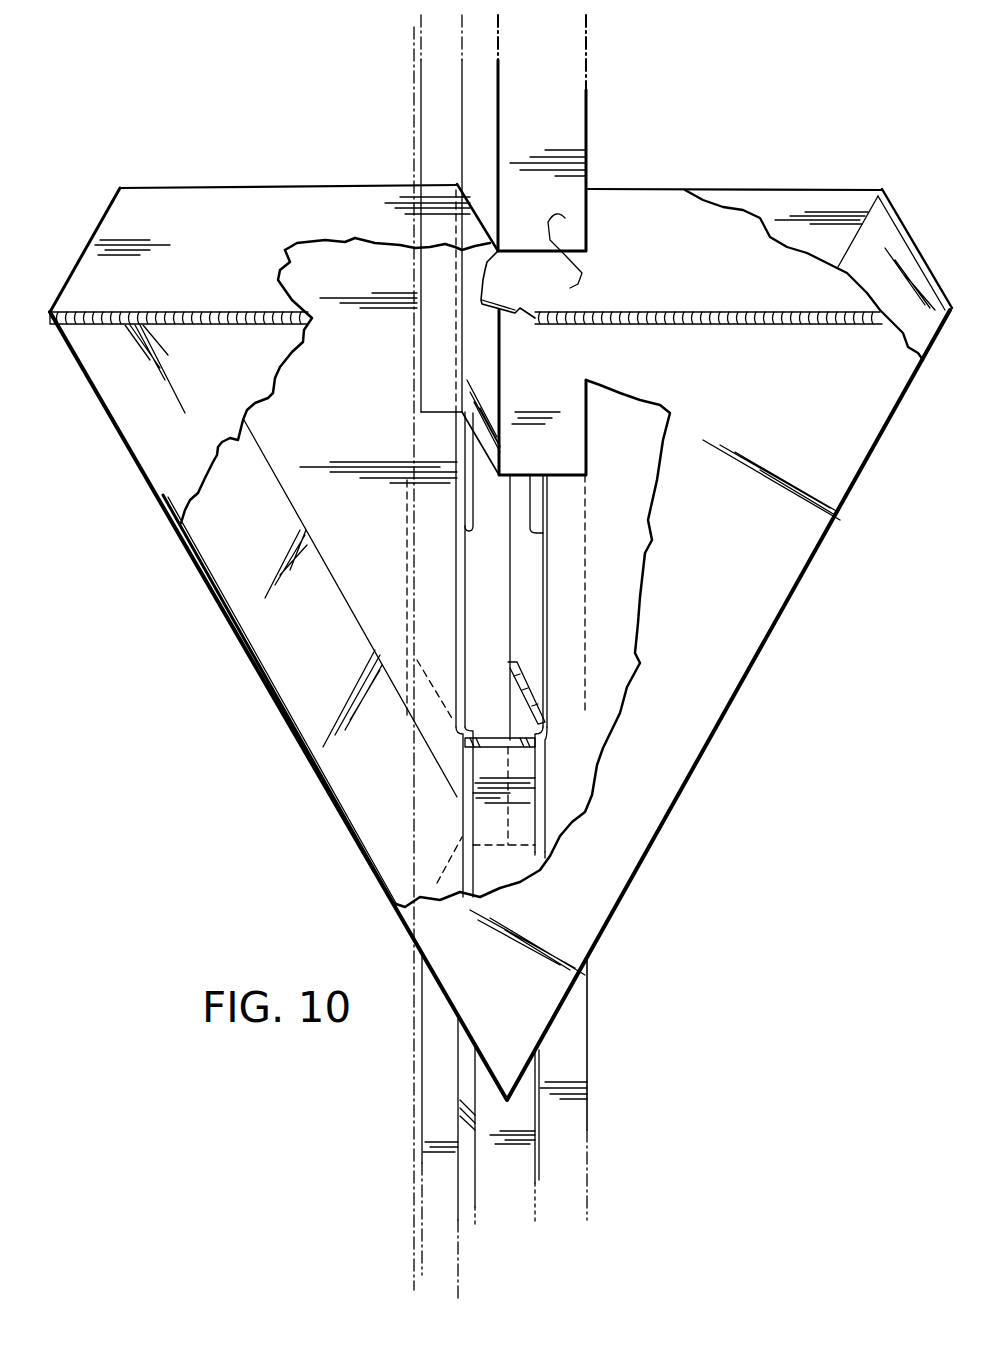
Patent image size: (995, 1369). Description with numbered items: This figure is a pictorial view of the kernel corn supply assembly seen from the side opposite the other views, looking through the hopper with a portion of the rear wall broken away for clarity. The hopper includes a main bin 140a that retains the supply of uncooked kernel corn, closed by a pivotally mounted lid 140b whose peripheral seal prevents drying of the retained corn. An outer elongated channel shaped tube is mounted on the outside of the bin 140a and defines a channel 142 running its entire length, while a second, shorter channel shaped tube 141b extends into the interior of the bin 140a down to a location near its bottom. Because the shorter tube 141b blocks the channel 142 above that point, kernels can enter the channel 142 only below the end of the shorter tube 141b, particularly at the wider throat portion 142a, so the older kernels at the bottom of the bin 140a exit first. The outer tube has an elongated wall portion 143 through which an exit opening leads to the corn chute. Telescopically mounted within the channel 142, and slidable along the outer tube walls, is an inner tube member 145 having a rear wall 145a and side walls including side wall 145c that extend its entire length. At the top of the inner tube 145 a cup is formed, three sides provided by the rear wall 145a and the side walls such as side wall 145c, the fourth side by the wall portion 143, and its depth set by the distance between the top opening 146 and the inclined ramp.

The main bin 140a is at (684, 757).
The lid 140b is at (172, 207).
The second shorter channel shaped tube 141b is at (528, 362).
The channel 142 is at (510, 522).
The wider throat portion 142a is at (518, 566).
The elongated wall portion 143 is at (503, 612).
The inner tube member 145 is at (517, 763).
The rear wall 145a is at (552, 852).
The side wall 145c is at (511, 697).
The top opening 146 is at (485, 703).